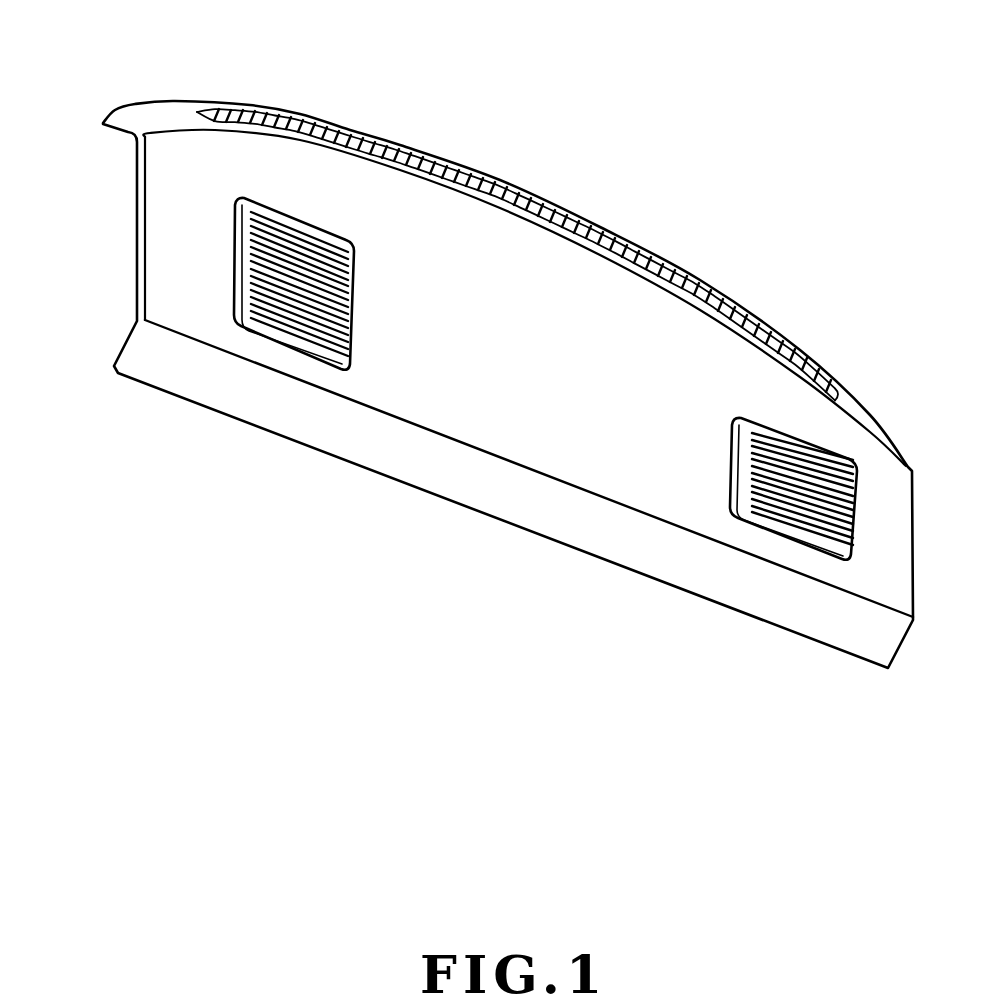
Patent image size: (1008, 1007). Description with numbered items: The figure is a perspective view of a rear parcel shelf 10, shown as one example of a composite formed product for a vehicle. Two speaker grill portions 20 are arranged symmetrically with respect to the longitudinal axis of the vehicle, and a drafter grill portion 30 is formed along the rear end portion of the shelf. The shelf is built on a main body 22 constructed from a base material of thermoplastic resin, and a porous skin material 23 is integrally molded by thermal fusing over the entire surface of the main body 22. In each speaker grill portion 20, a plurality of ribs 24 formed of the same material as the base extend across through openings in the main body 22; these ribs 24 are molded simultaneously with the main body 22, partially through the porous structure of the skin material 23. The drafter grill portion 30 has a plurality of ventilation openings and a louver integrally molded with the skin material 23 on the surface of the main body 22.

The rear parcel shelf 10 is at (590, 167).
The speaker grill portion 20 is at (232, 330).
The main body 22 is at (137, 259).
The porous skin material 23 is at (488, 418).
The ribs 24 is at (332, 300).
The drafter grill portion 30 is at (419, 147).